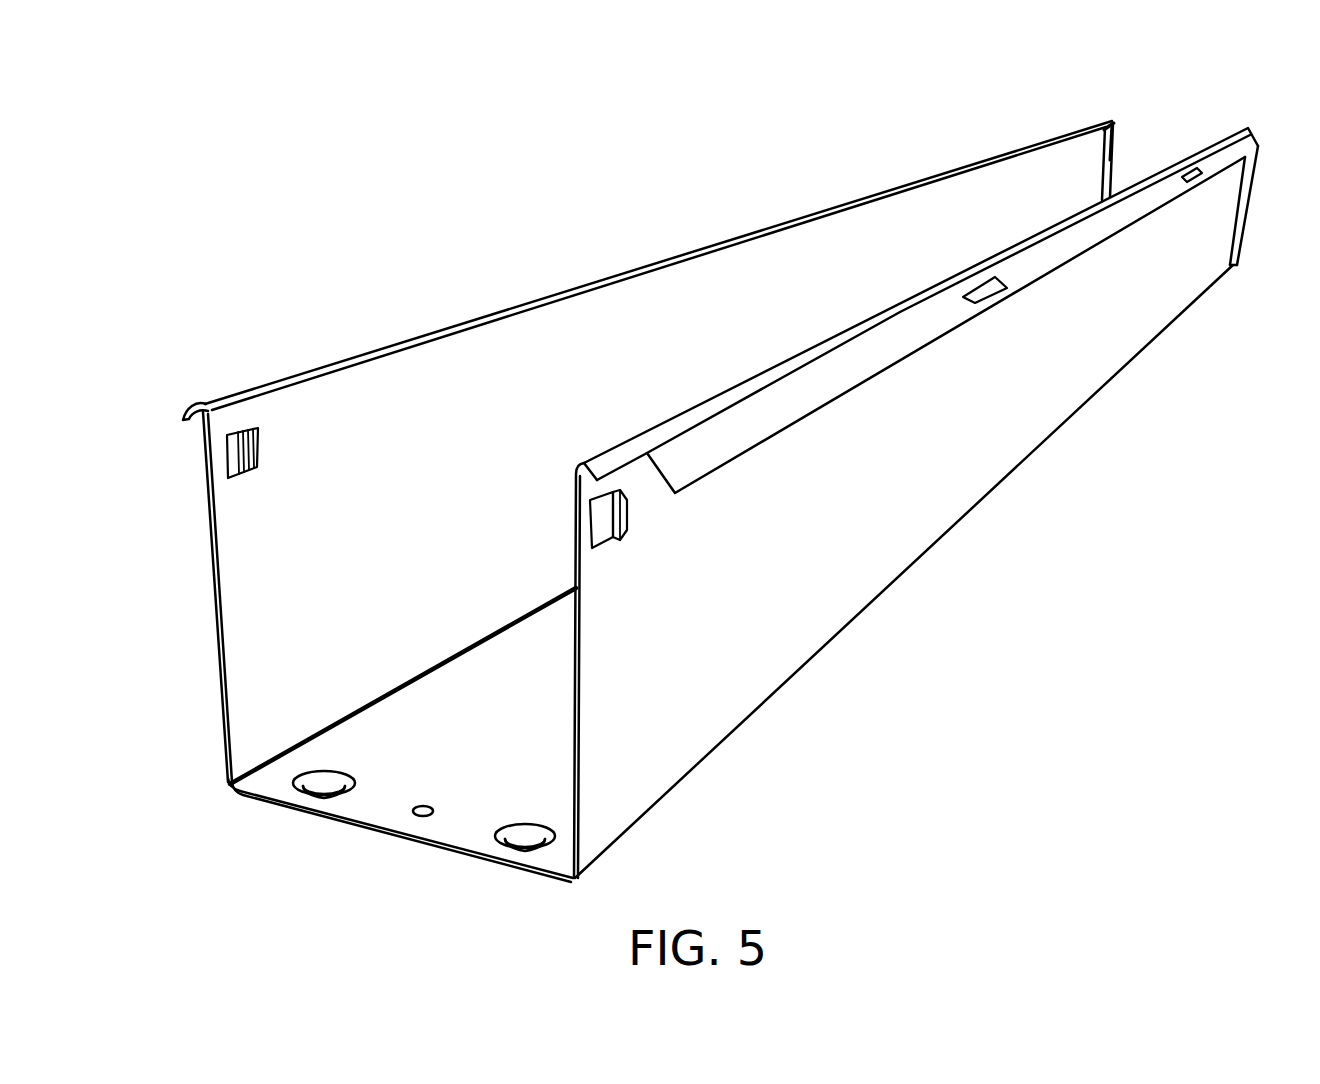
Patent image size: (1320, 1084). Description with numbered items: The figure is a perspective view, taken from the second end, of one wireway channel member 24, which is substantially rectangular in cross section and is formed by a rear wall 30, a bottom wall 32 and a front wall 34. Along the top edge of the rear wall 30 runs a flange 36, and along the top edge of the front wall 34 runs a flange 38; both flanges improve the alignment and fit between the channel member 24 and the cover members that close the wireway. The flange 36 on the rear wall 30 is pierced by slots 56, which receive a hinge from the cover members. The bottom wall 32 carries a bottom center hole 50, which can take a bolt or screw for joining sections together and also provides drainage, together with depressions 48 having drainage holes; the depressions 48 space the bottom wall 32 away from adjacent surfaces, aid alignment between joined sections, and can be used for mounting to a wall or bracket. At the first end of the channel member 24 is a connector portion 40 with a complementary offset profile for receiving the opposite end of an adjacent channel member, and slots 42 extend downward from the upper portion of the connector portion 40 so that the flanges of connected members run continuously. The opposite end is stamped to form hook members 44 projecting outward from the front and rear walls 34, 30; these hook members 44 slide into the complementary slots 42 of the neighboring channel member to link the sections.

The channel member 24 is at (1016, 536).
The rear wall 30 is at (899, 482).
The bottom wall 32 is at (524, 711).
The front wall 34 is at (469, 462).
The flange 36 is at (738, 440).
The flange 38 is at (193, 414).
The connector portion 40 is at (1250, 202).
The slot 42 is at (1112, 128).
The hook member 44 is at (237, 478).
The depression 48 is at (336, 776).
The bottom center hole 50 is at (433, 808).
The slot 56 is at (986, 288).